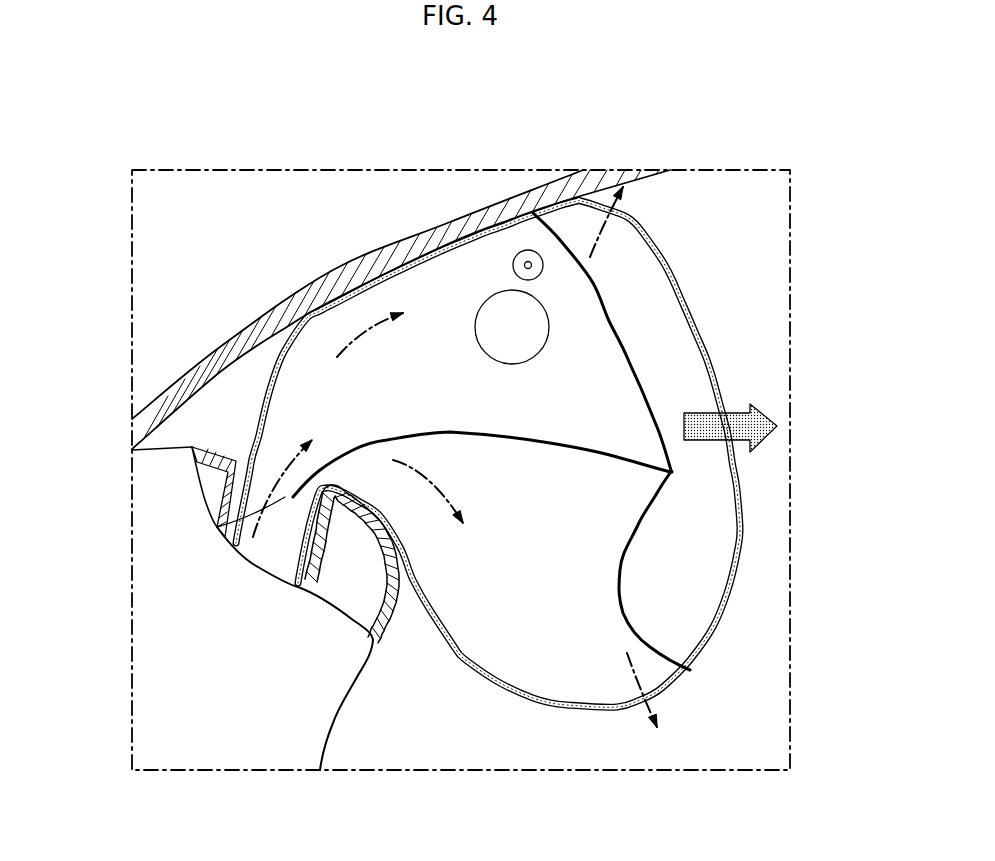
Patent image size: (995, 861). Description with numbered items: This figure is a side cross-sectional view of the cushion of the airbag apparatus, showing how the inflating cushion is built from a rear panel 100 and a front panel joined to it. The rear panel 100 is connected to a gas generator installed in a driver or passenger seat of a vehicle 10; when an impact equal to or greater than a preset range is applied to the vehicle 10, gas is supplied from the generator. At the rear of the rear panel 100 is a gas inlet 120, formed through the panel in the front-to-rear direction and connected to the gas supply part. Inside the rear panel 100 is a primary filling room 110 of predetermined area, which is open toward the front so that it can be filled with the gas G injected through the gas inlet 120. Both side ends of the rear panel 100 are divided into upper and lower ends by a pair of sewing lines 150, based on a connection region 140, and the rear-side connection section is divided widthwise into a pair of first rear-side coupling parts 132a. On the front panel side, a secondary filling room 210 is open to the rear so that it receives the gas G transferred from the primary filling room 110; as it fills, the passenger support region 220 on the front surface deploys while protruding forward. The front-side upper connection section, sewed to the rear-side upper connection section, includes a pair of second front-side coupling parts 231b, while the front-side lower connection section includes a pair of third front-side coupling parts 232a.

The rear panel 100 is at (290, 346).
The sewing lines 150 is at (387, 443).
The connection region 140 is at (251, 441).
The gas G is at (217, 529).
The gas inlet 120 is at (300, 553).
The vehicle 10 is at (313, 713).
The primary filling room 110 is at (536, 637).
The third front-side coupling parts 232a is at (623, 620).
The second front-side coupling parts 231b is at (603, 300).
The passenger support region 220 is at (704, 335).
The first rear-side coupling parts 132a is at (672, 482).
The secondary filling room 210 is at (686, 565).